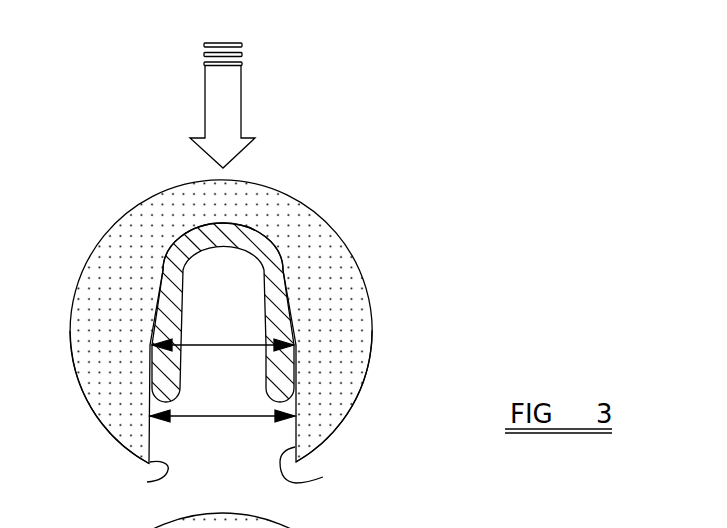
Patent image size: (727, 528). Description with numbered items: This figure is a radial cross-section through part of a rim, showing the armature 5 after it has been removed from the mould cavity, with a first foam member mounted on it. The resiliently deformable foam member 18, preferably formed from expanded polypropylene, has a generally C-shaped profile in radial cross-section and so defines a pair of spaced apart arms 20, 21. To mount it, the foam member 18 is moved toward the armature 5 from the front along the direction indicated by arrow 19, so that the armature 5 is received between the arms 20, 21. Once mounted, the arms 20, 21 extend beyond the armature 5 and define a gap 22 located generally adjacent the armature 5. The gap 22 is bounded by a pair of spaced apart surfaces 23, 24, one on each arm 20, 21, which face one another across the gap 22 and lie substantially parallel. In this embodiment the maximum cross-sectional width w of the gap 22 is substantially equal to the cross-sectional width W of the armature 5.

The arrow 19 is at (241, 102).
The foam member 18 is at (303, 203).
The armature 5 is at (265, 260).
The gap 22 is at (222, 385).
The arm 20 is at (133, 425).
The arm 21 is at (322, 410).
The surface 23 is at (147, 482).
The surface 24 is at (323, 477).